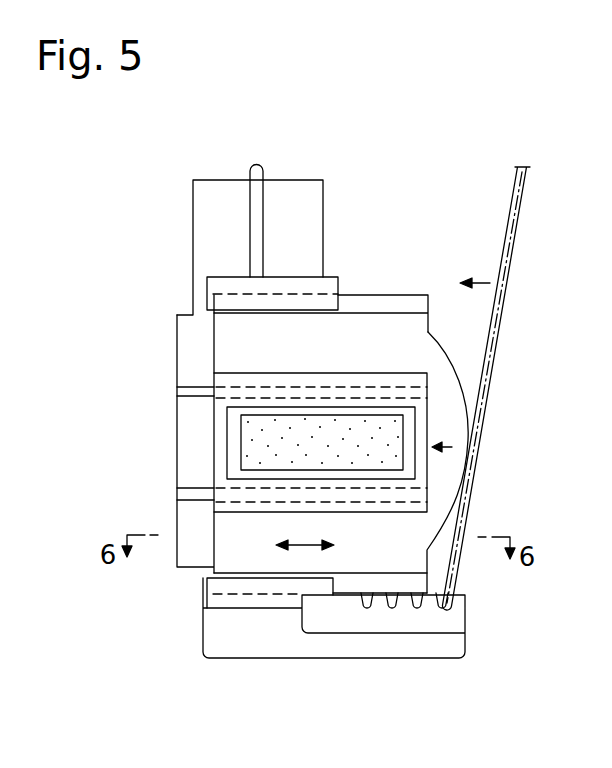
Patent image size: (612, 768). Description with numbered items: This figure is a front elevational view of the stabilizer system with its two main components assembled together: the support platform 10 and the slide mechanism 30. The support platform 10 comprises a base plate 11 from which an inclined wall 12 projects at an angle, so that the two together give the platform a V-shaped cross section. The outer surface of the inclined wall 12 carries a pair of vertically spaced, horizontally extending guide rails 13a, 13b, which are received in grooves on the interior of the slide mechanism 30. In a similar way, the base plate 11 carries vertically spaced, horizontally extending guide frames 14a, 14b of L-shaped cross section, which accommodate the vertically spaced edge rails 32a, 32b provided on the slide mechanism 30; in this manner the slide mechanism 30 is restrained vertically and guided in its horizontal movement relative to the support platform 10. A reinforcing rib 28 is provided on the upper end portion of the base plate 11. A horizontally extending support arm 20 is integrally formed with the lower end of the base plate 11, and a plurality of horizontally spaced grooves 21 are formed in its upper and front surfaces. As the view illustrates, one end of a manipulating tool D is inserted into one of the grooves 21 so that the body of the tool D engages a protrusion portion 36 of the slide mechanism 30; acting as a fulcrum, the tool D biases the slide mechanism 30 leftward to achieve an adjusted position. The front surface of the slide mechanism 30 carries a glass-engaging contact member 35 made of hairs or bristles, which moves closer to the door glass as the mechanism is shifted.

The support platform 10 is at (175, 343).
The base plate 11 is at (205, 220).
The inclined wall 12 is at (183, 365).
The guide rail 13a is at (195, 394).
The guide rail 13b is at (197, 483).
The guide frame 14a is at (295, 297).
The guide frame 14b is at (242, 588).
The support arm 20 is at (448, 625).
The grooves 21 is at (407, 605).
The reinforcing rib 28 is at (263, 212).
The slide mechanism 30 is at (455, 355).
The edge rail 32a is at (400, 305).
The edge rail 32b is at (418, 583).
The contact member 35 is at (250, 450).
The protrusion portion 36 is at (456, 413).
The manipulating tool D is at (492, 383).